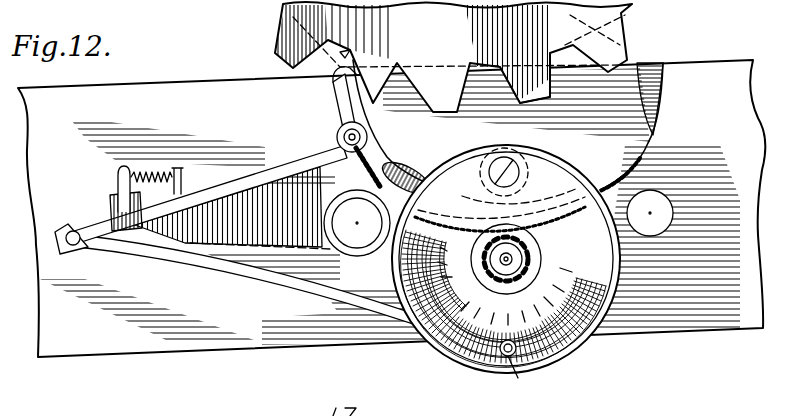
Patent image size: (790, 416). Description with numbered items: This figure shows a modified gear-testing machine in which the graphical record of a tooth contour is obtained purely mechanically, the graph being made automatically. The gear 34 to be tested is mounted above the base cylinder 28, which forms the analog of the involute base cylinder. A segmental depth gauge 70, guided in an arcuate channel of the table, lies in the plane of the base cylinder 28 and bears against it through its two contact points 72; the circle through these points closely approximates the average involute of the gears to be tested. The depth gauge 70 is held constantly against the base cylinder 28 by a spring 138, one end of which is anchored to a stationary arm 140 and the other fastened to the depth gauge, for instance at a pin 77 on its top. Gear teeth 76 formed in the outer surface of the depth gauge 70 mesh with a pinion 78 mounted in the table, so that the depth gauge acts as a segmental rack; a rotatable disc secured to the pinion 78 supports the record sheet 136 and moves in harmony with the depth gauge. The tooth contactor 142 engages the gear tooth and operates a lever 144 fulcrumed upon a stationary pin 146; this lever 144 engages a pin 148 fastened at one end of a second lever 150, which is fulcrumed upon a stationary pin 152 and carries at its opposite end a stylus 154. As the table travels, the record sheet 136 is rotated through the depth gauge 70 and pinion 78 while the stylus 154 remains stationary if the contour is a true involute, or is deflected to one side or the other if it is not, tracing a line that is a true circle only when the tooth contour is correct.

The base cylinder 28 is at (632, 3).
The gear 34 is at (623, 40).
The depth gauge 70 is at (637, 132).
The contact points 72 is at (342, 64).
The gear teeth 76 is at (647, 163).
The pin 77 is at (496, 179).
The pinion 78 is at (520, 256).
The record sheet 136 is at (598, 258).
The spring 138 is at (463, 163).
The stationary arm 140 is at (410, 168).
The tooth contactor 142 is at (336, 88).
The lever 144 is at (271, 168).
The stationary pin 146 is at (340, 130).
The pin 148 is at (76, 246).
The lever 150 is at (247, 267).
The stationary pin 152 is at (115, 203).
The stylus 154 is at (512, 360).